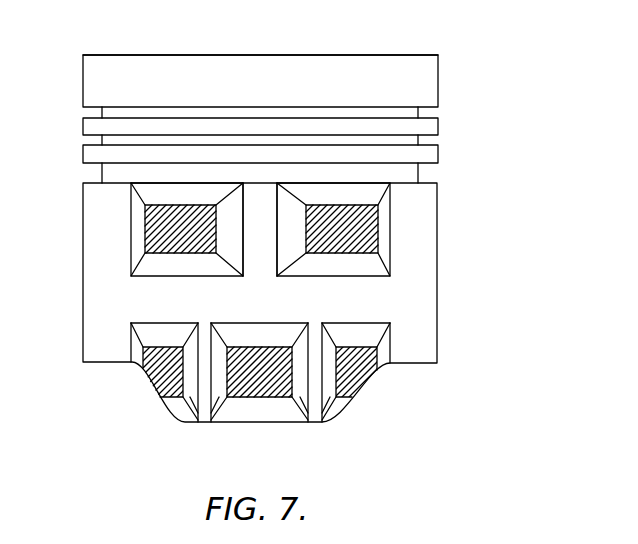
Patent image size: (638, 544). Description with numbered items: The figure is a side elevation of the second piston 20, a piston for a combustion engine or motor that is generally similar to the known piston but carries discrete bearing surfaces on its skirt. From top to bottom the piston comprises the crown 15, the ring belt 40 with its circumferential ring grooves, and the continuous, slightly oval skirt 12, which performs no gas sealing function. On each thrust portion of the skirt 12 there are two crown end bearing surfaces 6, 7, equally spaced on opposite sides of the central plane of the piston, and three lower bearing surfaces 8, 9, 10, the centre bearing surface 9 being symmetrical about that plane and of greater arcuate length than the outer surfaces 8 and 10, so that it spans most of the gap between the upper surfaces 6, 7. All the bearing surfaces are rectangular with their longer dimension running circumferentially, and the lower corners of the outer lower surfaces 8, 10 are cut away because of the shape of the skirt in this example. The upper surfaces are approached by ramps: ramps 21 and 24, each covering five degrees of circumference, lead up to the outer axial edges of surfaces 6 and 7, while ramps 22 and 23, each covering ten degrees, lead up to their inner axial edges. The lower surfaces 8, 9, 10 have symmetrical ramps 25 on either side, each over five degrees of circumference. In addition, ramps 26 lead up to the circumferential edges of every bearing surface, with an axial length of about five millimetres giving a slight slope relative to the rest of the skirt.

The ring belt 40 is at (148, 72).
The crown 15 is at (383, 55).
The second piston 20 is at (462, 128).
The skirt 12 is at (417, 237).
The ramp 21 is at (133, 242).
The ramp 22 is at (238, 239).
The ramp 23 is at (292, 246).
The ramp 24 is at (387, 246).
The crown end bearing surface 6 is at (162, 226).
The crown end bearing surface 7 is at (360, 228).
The lower bearing surface 8 is at (163, 372).
The centre bearing surface 9 is at (263, 382).
The lower bearing surface 10 is at (350, 377).
The ramps 25 is at (139, 353).
The ramps 26 is at (232, 333).